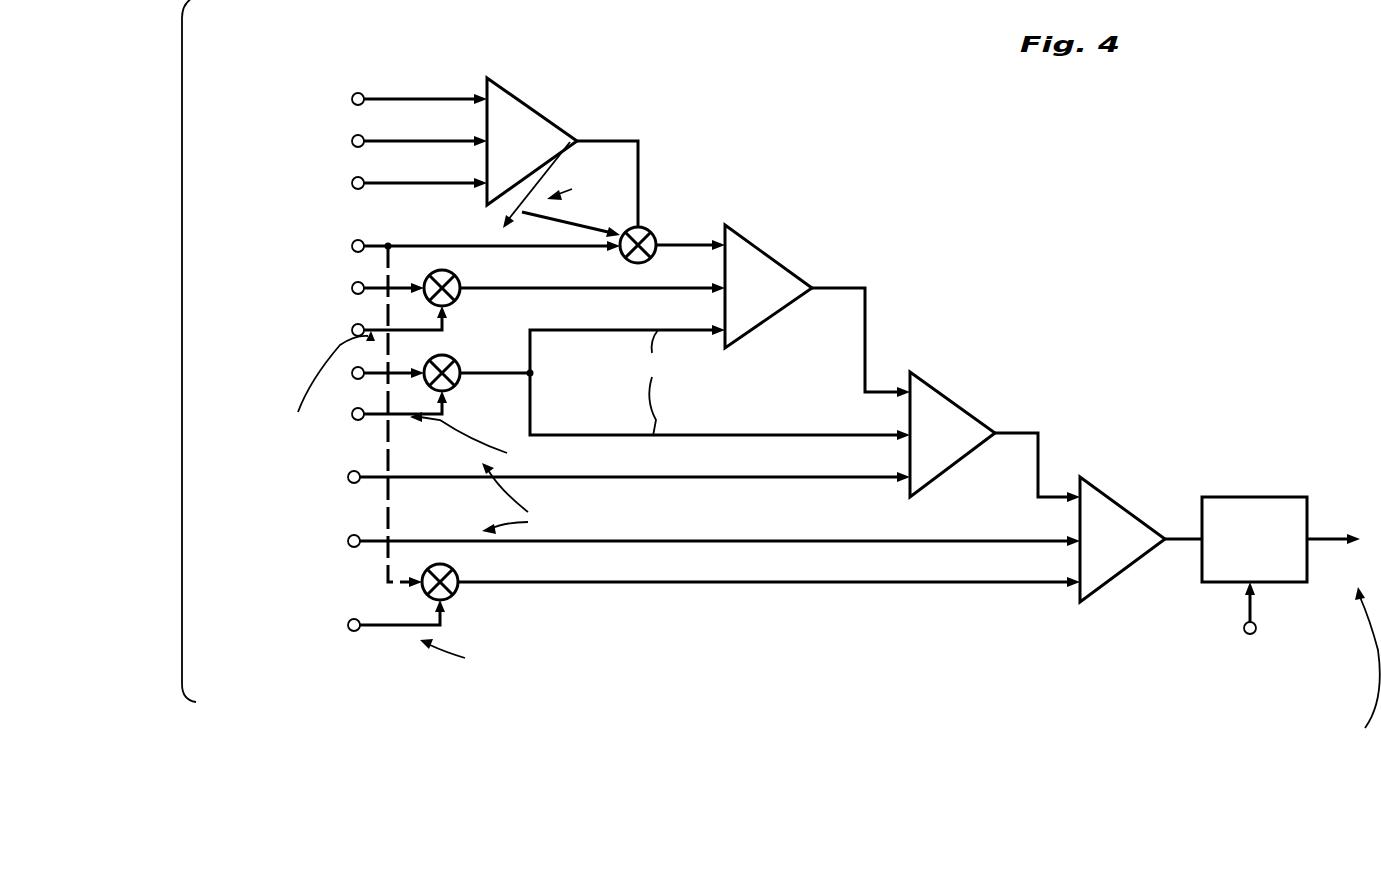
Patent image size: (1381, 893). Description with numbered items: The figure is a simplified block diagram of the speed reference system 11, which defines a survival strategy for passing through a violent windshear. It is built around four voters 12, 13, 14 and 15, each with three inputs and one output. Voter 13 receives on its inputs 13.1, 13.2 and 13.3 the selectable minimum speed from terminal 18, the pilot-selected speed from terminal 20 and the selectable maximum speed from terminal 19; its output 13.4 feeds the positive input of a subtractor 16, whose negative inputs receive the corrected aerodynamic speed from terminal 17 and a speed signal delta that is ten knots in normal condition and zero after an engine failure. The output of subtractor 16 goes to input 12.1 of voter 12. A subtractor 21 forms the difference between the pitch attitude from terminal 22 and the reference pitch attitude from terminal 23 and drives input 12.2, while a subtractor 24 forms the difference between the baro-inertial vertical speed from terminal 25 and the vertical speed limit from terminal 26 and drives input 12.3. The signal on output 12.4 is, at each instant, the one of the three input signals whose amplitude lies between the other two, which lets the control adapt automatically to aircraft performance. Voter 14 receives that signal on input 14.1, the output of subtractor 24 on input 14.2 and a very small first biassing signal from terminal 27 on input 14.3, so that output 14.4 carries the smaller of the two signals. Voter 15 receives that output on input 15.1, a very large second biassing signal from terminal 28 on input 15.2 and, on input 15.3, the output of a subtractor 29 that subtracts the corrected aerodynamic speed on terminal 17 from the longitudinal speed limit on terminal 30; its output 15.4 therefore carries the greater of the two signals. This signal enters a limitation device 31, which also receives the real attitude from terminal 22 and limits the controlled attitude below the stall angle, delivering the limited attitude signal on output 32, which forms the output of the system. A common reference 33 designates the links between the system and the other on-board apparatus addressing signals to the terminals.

The speed reference system 11 is at (996, 300).
The voter 12 is at (764, 265).
The input of voter 12.1 is at (697, 242).
The input of voter 12.2 is at (712, 294).
The input of voter 12.3 is at (707, 308).
The output of voter 12.4 is at (836, 290).
The voter 13 is at (528, 110).
The input of voter 13.1 is at (464, 96).
The input of voter 13.2 is at (443, 155).
The input of voter 13.3 is at (460, 186).
The output of voter 13.4 is at (608, 141).
The voter 14 is at (956, 410).
The input of voter 14.1 is at (865, 388).
The input of voter 14.2 is at (864, 436).
The input of voter 14.3 is at (868, 478).
The output of voter 14.4 is at (1030, 430).
The voter 15 is at (1100, 595).
The input of voter 15.1 is at (1062, 475).
The input of voter 15.2 is at (960, 558).
The input of voter 15.3 is at (948, 604).
The output of voter 15.4 is at (1183, 538).
The subtractor 16 is at (655, 220).
The terminal 17 is at (364, 234).
The terminal 18 is at (352, 100).
The terminal 19 is at (298, 228).
The terminal 20 is at (353, 140).
The subtractor 21 is at (462, 284).
The terminal 22 is at (360, 272).
The terminal 23 is at (353, 324).
The subtractor 24 is at (462, 364).
The terminal 25 is at (292, 478).
The terminal 26 is at (292, 478).
The terminal 27 is at (320, 592).
The terminal 28 is at (312, 593).
The subtractor 29 is at (460, 578).
The terminal 30 is at (348, 626).
The limitation device 31 is at (1256, 496).
The output of limitation device 32 is at (1340, 446).
The common reference 33 is at (182, 347).